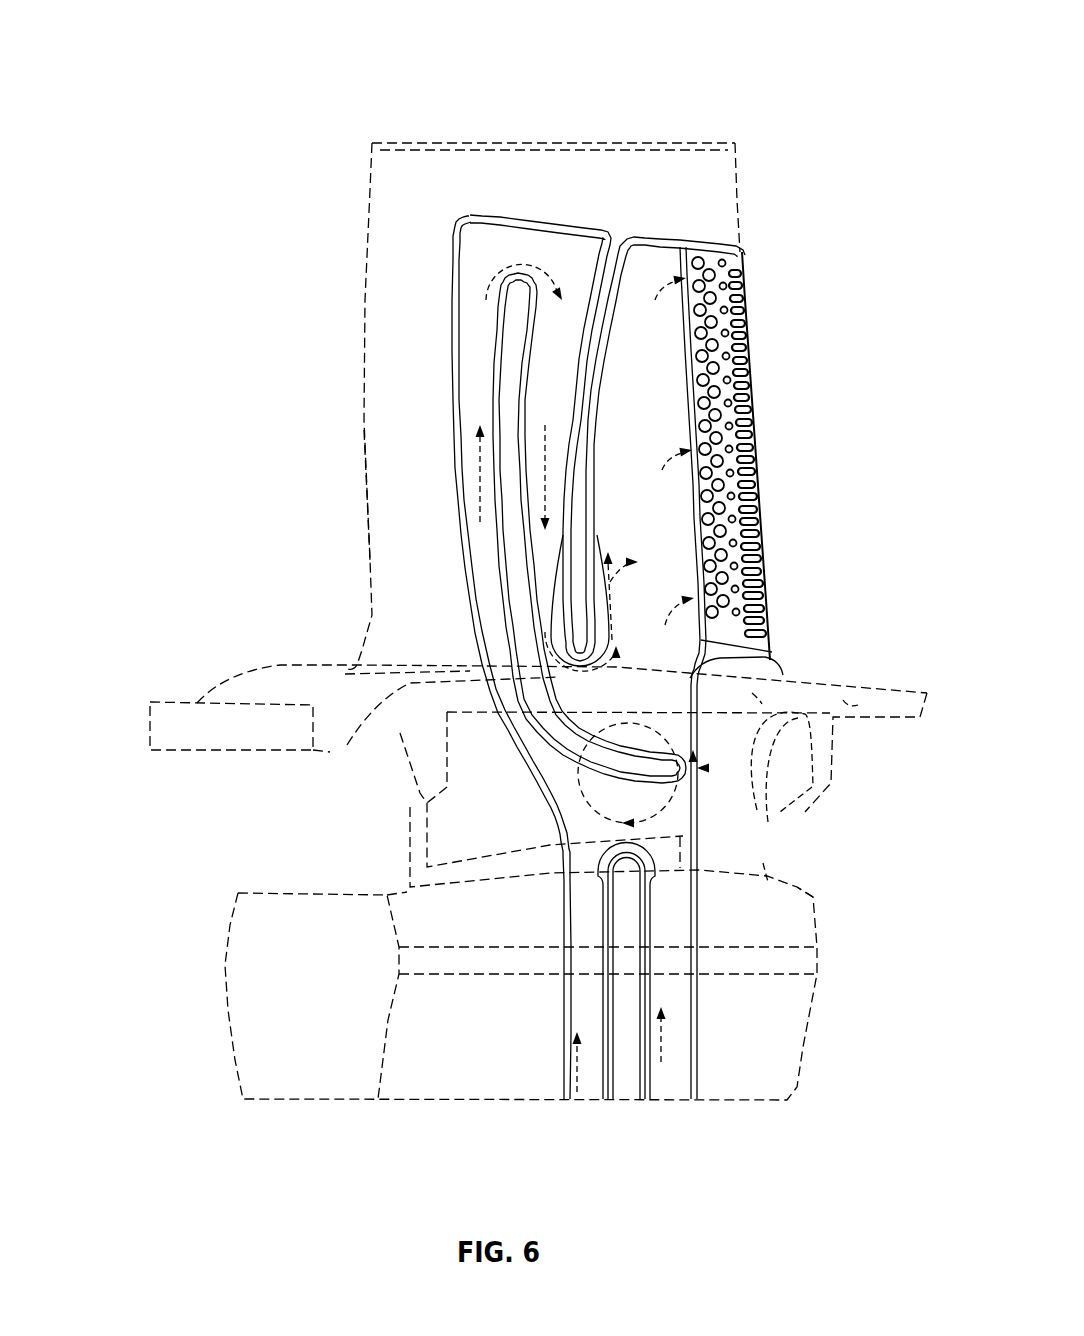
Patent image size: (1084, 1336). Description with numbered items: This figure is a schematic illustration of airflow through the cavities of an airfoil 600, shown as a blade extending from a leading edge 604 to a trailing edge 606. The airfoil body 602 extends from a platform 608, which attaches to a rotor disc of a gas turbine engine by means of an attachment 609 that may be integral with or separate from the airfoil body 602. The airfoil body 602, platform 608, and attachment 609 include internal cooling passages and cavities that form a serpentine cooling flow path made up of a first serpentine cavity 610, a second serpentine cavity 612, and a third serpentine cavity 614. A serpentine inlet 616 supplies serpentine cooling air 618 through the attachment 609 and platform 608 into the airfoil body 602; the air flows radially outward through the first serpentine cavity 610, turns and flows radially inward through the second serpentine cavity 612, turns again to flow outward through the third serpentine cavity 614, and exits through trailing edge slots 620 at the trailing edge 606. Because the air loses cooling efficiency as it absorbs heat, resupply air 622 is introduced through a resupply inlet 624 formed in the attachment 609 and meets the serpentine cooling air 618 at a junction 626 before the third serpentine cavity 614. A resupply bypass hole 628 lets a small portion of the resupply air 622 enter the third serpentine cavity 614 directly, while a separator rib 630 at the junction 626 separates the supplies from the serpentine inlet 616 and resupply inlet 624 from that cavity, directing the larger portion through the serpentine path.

The airfoil 600 is at (402, 44).
The airfoil body 602 is at (384, 228).
The leading edge 604 is at (367, 480).
The trailing edge 606 is at (740, 205).
The platform 608 is at (160, 728).
The attachment 609 is at (243, 1007).
The first serpentine cavity 610 is at (498, 325).
The second serpentine cavity 612 is at (579, 355).
The third serpentine cavity 614 is at (672, 377).
The serpentine inlet 616 is at (579, 1125).
The serpentine cooling air 618 is at (575, 1070).
The trailing edge slots 620 is at (762, 540).
The resupply air 622 is at (663, 1062).
The resupply inlet 624 is at (655, 1116).
The junction 626 is at (575, 762).
The resupply bypass hole 628 is at (700, 768).
The separator rib 630 is at (560, 812).